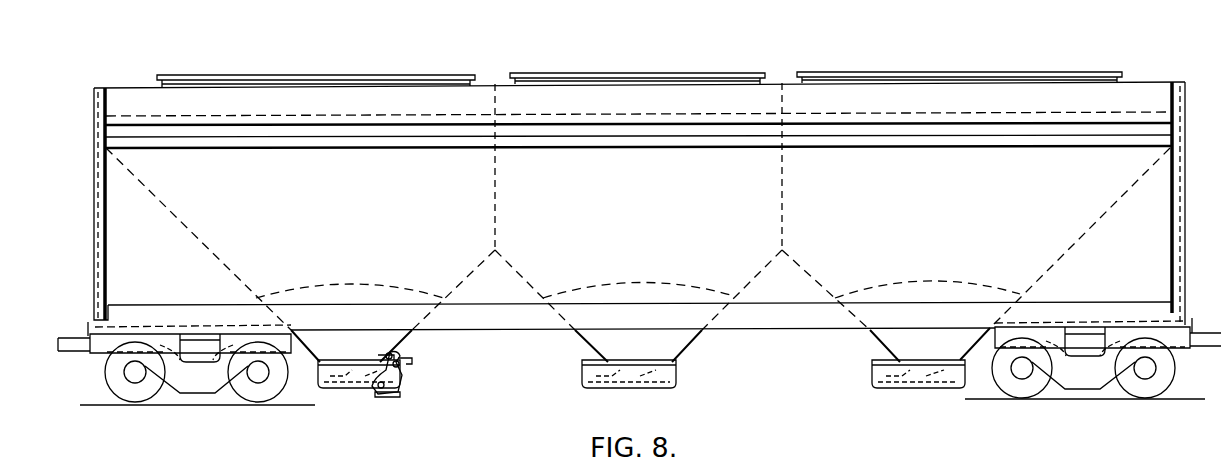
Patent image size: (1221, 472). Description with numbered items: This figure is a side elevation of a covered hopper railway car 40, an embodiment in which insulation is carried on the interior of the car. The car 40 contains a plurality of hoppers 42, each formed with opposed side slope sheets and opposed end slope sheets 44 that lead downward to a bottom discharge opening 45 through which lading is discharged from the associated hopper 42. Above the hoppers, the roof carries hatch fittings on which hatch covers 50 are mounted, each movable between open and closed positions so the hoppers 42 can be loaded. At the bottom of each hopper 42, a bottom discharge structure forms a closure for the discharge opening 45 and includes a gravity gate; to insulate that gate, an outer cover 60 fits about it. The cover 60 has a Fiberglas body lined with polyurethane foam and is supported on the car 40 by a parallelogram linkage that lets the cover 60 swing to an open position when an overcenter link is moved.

The covered hopper railway car 40 is at (792, 68).
The hopper 42 is at (352, 237).
The end slope sheet 44 is at (638, 287).
The bottom discharge opening 45 is at (350, 374).
The hatch cover 50 is at (285, 76).
The outer cover 60 is at (363, 392).